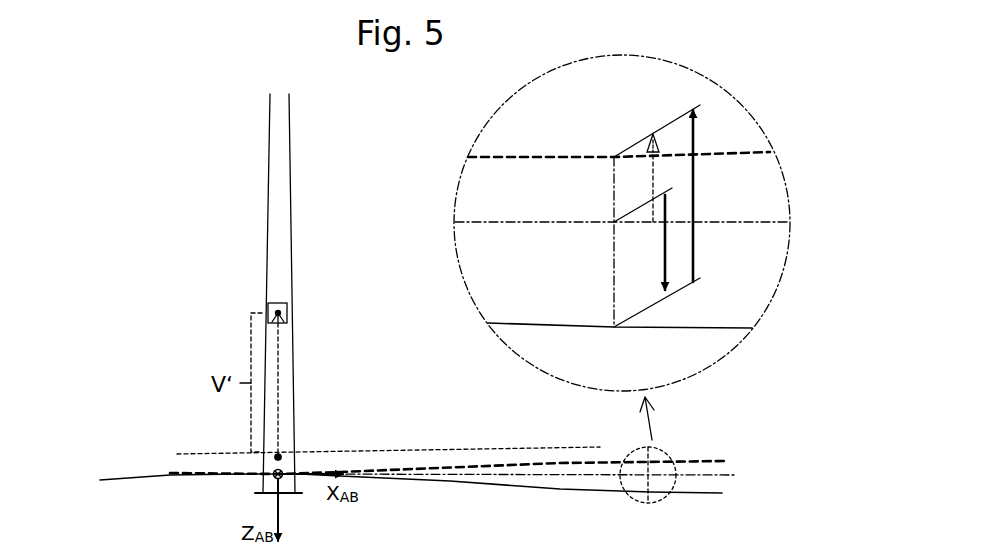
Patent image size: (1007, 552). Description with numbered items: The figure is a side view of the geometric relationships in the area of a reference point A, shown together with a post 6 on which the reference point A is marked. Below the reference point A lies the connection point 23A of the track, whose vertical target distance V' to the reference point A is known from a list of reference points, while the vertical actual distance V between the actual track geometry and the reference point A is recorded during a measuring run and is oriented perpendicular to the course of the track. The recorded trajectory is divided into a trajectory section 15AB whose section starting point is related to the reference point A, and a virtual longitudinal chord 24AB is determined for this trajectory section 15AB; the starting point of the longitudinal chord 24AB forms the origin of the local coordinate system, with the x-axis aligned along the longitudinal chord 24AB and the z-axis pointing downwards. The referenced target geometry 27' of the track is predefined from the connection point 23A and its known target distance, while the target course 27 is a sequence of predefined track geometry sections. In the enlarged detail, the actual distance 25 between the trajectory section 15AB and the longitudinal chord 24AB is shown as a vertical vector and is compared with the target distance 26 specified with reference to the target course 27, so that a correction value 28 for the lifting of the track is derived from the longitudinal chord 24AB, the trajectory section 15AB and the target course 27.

The tower 6 is at (277, 187).
The reference point A is at (288, 312).
The vertical actual distance V is at (281, 391).
The connection point 23A is at (280, 455).
The trajectory section 15AB is at (545, 492).
The longitudinal chord 24AB is at (736, 477).
The target course 27 is at (470, 292).
The referenced target geometry 27' is at (388, 429).
The actual distance 25 is at (664, 240).
The target distance 26 is at (654, 164).
The correction value 28 is at (694, 168).